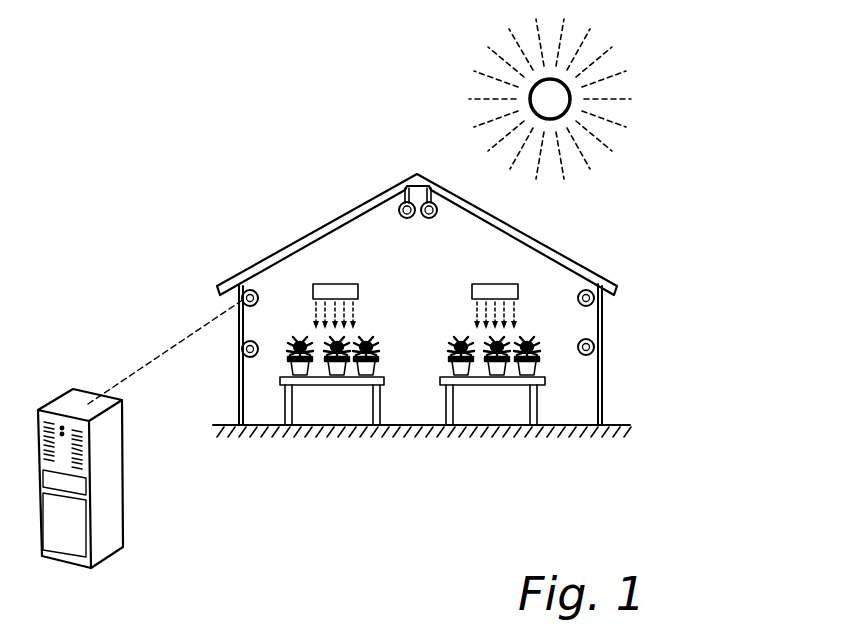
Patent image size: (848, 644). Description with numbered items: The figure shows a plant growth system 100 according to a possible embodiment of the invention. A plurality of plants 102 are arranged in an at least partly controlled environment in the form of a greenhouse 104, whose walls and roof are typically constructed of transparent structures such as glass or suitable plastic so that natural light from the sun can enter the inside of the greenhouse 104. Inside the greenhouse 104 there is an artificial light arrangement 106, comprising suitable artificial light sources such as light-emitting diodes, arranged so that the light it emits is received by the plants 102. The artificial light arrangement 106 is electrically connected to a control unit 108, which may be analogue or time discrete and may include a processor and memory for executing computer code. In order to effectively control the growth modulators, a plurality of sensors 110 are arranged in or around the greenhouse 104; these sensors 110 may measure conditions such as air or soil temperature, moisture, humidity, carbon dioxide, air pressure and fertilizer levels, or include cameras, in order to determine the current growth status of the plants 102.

The system 100 is at (652, 199).
The plants 102 is at (290, 342).
The greenhouse 104 is at (592, 272).
The artificial light arrangement 106 is at (337, 290).
The control unit 108 is at (66, 402).
The sensors 110 is at (238, 288).